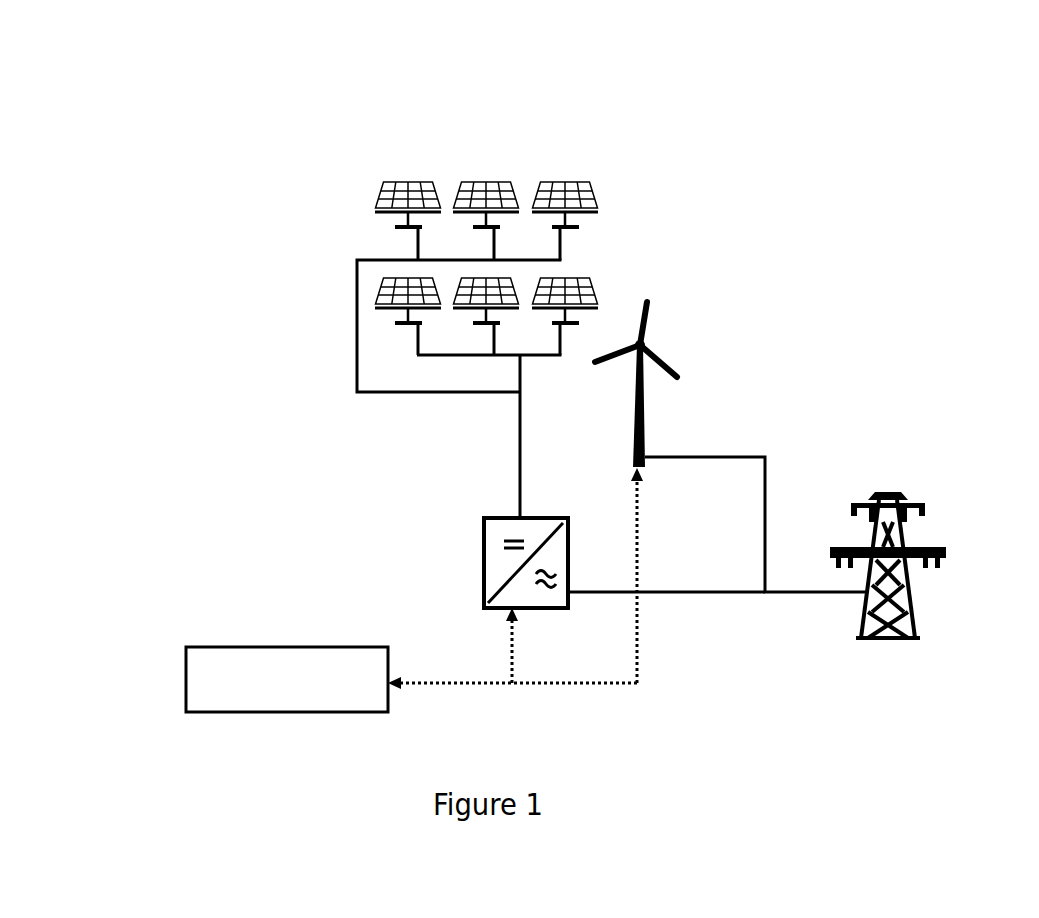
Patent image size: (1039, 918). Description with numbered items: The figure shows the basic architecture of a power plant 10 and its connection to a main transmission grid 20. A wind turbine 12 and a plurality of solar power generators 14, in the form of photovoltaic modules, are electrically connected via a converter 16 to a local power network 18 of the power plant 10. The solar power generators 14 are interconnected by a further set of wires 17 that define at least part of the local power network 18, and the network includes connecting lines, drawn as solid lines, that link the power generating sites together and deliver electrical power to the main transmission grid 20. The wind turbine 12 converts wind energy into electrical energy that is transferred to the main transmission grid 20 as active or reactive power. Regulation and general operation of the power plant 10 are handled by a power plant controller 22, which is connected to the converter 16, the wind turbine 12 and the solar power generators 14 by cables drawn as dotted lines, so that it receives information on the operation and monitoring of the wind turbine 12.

The power plant 10 is at (720, 176).
The wind turbine 12 is at (650, 405).
The solar power generators 14 is at (410, 181).
The converter 16 is at (483, 562).
The wires 17 is at (357, 334).
The local power network 18 is at (803, 422).
The main transmission grid 20 is at (933, 546).
The power plant controller 22 is at (287, 712).